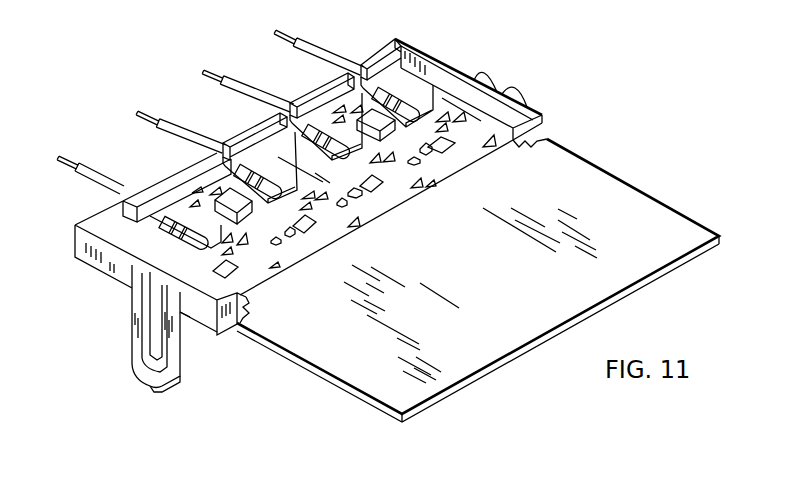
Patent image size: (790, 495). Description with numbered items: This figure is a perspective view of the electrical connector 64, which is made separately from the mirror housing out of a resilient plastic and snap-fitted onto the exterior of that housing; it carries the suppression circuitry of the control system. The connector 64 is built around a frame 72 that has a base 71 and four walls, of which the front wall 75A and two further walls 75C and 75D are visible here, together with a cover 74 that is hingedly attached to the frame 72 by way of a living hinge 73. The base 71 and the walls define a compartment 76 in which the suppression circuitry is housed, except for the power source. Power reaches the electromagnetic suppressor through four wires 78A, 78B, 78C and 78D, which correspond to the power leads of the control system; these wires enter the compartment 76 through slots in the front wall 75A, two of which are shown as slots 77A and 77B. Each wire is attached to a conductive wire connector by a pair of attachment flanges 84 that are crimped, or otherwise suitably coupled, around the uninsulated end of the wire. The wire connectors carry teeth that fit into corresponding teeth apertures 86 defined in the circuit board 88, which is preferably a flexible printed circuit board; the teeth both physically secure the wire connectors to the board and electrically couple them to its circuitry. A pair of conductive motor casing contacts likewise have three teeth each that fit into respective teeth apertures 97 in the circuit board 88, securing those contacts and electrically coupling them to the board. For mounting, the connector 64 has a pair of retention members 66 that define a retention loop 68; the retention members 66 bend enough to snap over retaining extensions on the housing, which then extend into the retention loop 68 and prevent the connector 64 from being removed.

The electrical connector 64 is at (541, 66).
The retention members 66 is at (155, 381).
The retention loop 68 is at (157, 328).
The base 71 is at (199, 332).
The frame 72 is at (118, 263).
The living hinge 73 is at (472, 165).
The cover 74 is at (579, 165).
The front wall 75A is at (255, 131).
The wall 75C is at (432, 53).
The wall 75D is at (238, 326).
The compartment 76 is at (122, 233).
The slot 77A is at (358, 67).
The slot 77B is at (289, 107).
The wire 78A is at (292, 42).
The wire 78B is at (222, 85).
The wire 78C is at (156, 125).
The wire 78D is at (82, 169).
The attachment flanges 84 is at (168, 218).
The teeth apertures 86 is at (250, 247).
The circuit board 88 is at (396, 75).
The teeth apertures 97 is at (200, 193).